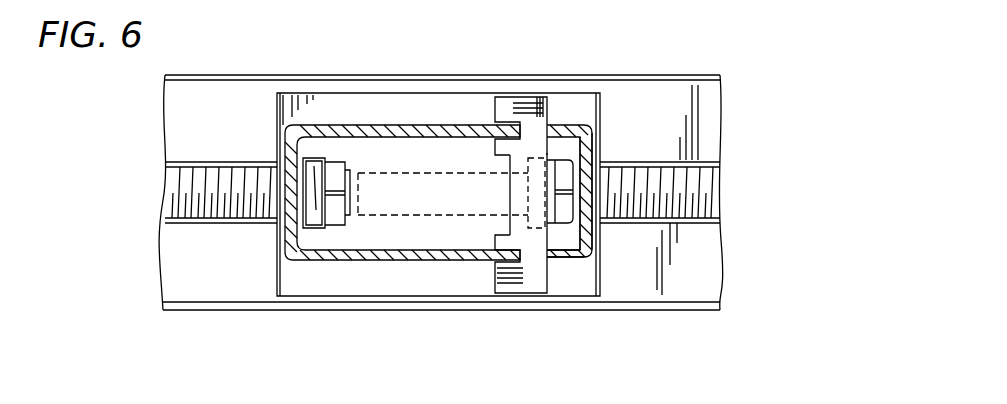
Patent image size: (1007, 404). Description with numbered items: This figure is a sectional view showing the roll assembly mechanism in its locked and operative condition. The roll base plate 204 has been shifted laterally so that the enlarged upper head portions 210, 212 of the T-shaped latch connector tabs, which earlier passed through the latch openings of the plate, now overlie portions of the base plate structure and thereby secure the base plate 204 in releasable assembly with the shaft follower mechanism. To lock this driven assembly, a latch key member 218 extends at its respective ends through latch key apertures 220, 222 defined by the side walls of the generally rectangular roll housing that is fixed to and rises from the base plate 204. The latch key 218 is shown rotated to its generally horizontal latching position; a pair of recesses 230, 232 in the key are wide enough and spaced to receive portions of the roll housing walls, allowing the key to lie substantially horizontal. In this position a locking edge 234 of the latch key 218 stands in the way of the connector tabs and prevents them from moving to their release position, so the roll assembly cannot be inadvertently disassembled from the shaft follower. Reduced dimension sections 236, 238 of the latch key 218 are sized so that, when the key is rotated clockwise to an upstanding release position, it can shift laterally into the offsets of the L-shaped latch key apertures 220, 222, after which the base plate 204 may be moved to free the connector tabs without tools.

The roll base plate 204 is at (358, 282).
The enlarged upper head portion 210 is at (340, 165).
The enlarged upper head portion 212 is at (568, 217).
The latch key member 218 is at (522, 283).
The latch key aperture 220 is at (548, 128).
The latch key aperture 222 is at (553, 260).
The recess 230 is at (488, 127).
The recess 232 is at (492, 258).
The locking edge 234 is at (552, 150).
The reduced dimension section 236 is at (534, 115).
The reduced dimension section 238 is at (533, 255).